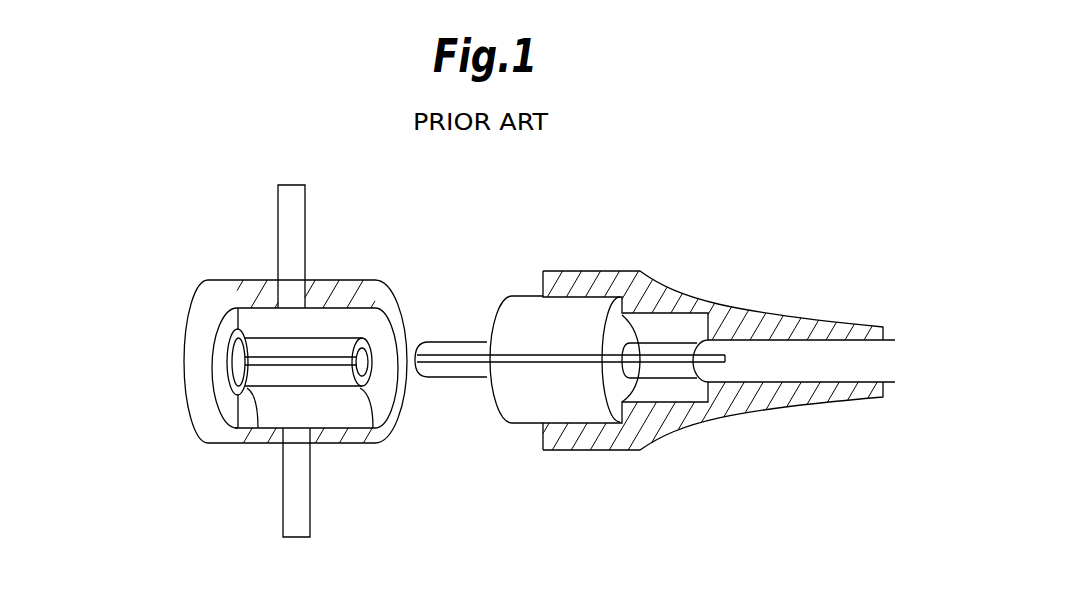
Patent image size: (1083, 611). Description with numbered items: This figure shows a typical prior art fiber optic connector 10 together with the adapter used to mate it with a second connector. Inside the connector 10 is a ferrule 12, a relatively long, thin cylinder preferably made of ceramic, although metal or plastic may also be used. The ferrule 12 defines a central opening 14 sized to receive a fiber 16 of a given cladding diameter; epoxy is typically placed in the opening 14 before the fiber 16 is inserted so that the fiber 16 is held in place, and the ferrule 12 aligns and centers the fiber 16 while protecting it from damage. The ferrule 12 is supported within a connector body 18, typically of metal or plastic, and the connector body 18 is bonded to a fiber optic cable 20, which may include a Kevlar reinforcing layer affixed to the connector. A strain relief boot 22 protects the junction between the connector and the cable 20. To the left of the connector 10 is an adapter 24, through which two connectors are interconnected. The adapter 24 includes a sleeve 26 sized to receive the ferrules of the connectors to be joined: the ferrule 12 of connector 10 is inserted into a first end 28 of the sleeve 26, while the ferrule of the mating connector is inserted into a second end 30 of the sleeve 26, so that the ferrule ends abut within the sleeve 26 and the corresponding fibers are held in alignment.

The connector 10 is at (718, 207).
The ferrule 12 is at (432, 346).
The central opening 14 is at (460, 357).
The fiber 16 is at (672, 362).
The connector body 18 is at (523, 297).
The fiber optic cable 20 is at (832, 343).
The strain relief boot 22 is at (650, 272).
The adapter 24 is at (222, 280).
The sleeve 26 is at (240, 430).
The first end 28 is at (373, 428).
The second end 30 is at (228, 382).